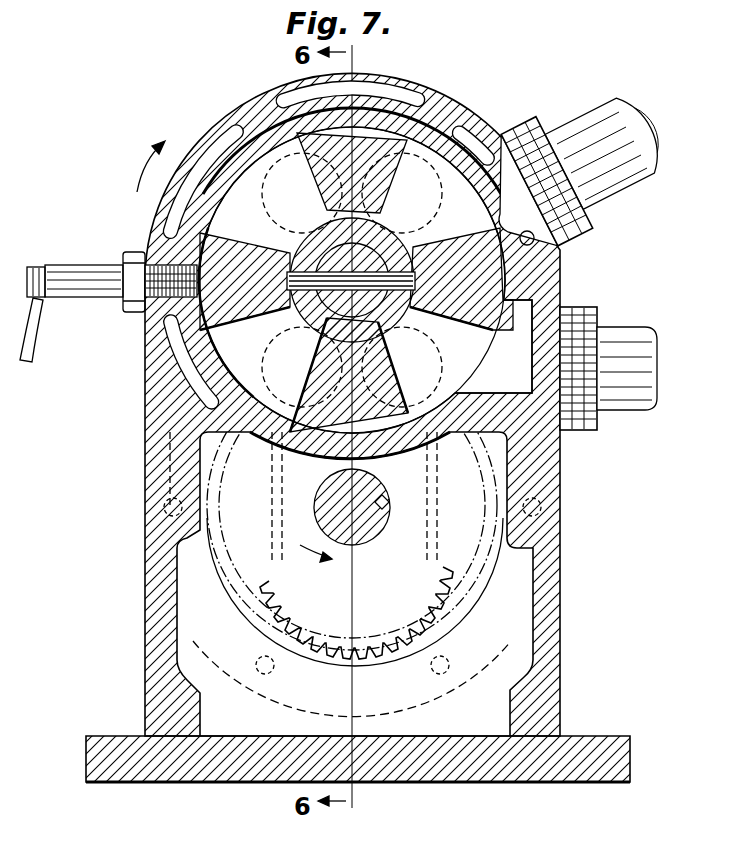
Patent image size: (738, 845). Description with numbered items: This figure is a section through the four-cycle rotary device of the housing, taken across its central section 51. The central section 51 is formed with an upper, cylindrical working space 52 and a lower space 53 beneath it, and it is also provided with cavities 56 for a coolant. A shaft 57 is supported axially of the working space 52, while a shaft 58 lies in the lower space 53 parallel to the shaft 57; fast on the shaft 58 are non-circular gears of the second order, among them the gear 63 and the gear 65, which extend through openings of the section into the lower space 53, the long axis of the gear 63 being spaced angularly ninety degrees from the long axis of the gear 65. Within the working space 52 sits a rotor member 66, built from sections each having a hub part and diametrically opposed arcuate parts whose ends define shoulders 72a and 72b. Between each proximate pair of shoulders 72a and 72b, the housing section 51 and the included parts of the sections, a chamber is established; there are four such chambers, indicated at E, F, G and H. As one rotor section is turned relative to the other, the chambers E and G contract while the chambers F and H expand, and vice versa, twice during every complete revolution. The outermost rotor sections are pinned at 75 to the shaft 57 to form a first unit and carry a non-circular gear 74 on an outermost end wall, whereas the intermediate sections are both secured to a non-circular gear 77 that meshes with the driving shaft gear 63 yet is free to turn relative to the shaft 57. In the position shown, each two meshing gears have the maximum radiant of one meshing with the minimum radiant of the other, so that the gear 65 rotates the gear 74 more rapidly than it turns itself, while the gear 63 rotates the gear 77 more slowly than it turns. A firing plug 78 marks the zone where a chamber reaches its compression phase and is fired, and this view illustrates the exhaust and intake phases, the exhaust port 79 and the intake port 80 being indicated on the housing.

The central section 51 is at (145, 453).
The upper cylindrical working space 52 is at (228, 152).
The lower space 53 is at (240, 705).
The cavities 56 is at (392, 100).
The shaft 57 is at (285, 343).
The shaft 58 is at (370, 518).
The gear 63 is at (263, 550).
The gear 65 is at (418, 607).
The rotor member 66 is at (386, 116).
The end shoulder 72a is at (483, 224).
The end shoulder 72b is at (440, 126).
The non-circular gear 74 is at (425, 198).
The pin 75 is at (418, 318).
The non-circular gear 77 is at (300, 166).
The firing plug 78 is at (100, 288).
The exhaust port 79 is at (585, 130).
The intake port 80 is at (617, 347).
The chamber E is at (230, 356).
The chamber F is at (268, 158).
The chamber G is at (488, 108).
The chamber H is at (476, 340).